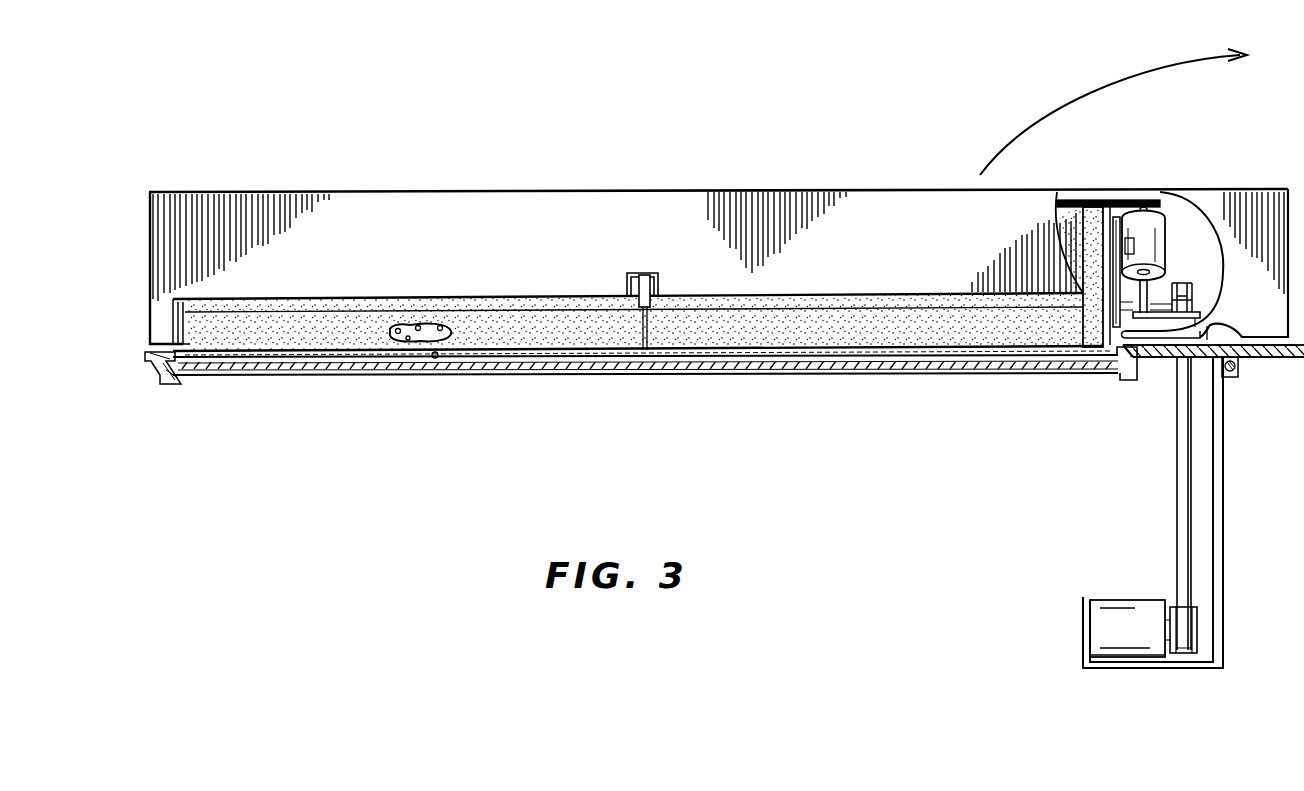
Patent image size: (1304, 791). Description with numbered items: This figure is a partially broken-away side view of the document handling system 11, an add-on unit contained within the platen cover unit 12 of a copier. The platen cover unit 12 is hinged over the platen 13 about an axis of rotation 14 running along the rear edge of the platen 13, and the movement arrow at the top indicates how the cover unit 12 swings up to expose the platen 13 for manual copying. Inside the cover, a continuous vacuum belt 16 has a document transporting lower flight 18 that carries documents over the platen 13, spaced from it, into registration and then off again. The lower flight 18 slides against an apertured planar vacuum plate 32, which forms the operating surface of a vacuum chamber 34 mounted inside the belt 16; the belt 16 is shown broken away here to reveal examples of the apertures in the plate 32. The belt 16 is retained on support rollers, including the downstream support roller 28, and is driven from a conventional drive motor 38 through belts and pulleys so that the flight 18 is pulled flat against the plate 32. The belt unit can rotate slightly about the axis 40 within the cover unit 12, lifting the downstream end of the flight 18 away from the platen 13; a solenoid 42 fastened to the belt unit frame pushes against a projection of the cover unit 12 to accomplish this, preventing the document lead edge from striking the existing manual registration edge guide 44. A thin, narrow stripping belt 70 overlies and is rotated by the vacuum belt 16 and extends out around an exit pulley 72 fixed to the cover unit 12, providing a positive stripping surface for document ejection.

The document handling system 11 is at (498, 174).
The platen cover unit 12 is at (657, 191).
The platen 13 is at (340, 377).
The axis of rotation 14 is at (1240, 376).
The vacuum belt 16 is at (527, 344).
The lower flight 18 is at (610, 351).
The support roller 28 is at (173, 337).
The vacuum plate 32 is at (430, 321).
The vacuum chamber 34 is at (770, 331).
The drive motor 38 is at (1120, 606).
The axis 40 is at (1200, 305).
The solenoid 42 is at (1148, 222).
The manual registration edge guide 44 is at (436, 358).
The stripping belt 70 is at (643, 328).
The exit pulley 72 is at (628, 290).